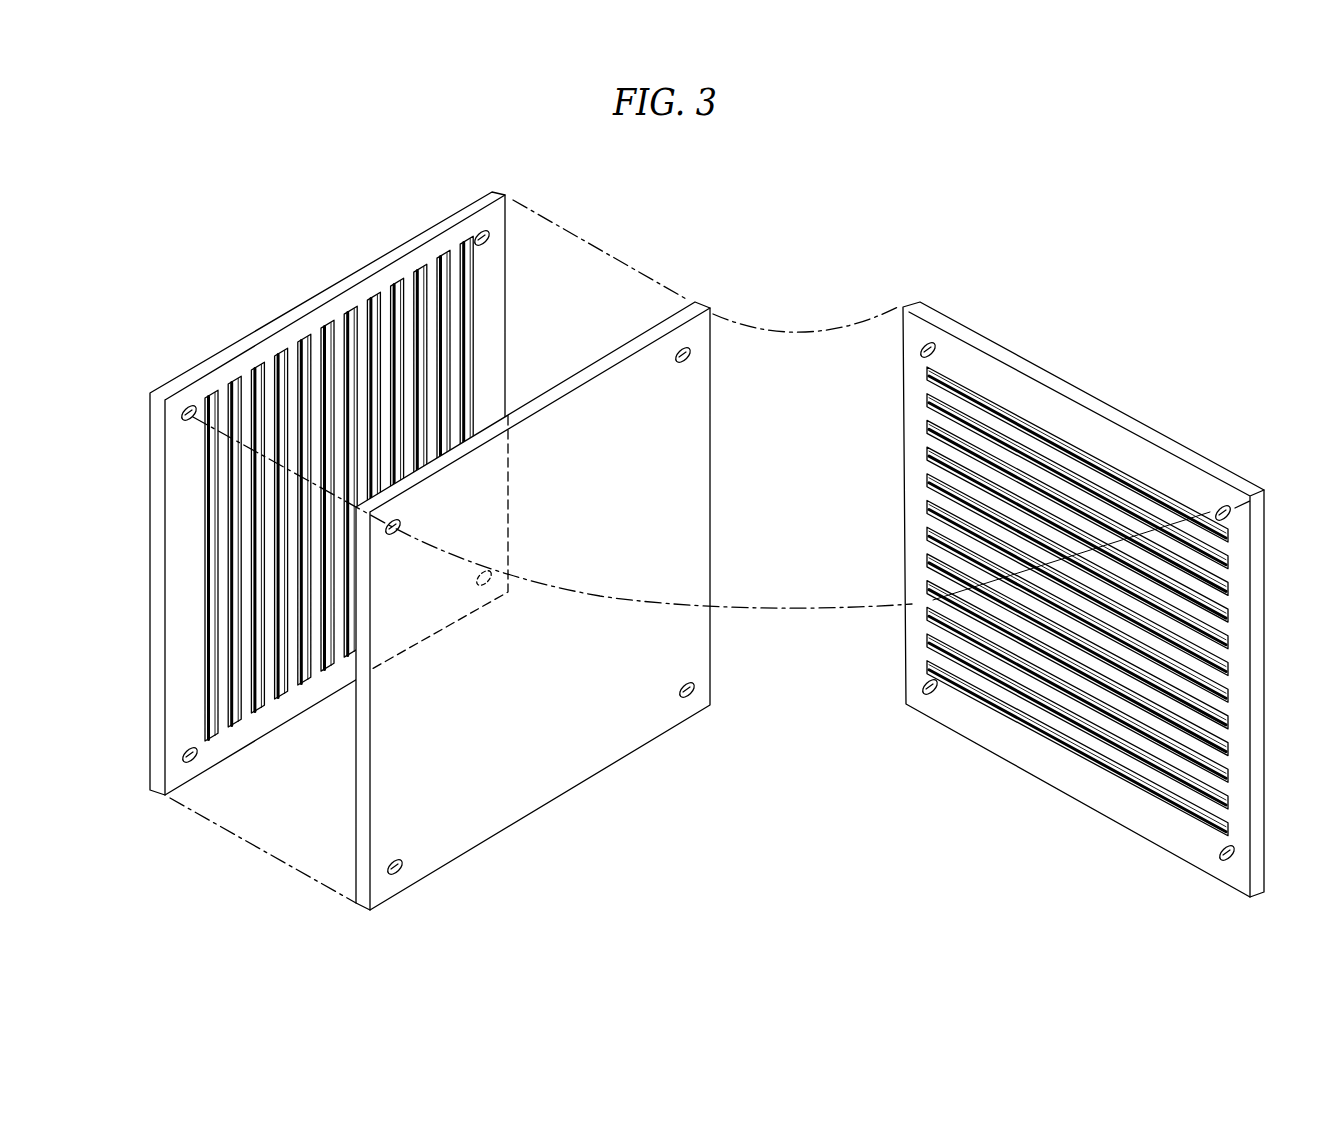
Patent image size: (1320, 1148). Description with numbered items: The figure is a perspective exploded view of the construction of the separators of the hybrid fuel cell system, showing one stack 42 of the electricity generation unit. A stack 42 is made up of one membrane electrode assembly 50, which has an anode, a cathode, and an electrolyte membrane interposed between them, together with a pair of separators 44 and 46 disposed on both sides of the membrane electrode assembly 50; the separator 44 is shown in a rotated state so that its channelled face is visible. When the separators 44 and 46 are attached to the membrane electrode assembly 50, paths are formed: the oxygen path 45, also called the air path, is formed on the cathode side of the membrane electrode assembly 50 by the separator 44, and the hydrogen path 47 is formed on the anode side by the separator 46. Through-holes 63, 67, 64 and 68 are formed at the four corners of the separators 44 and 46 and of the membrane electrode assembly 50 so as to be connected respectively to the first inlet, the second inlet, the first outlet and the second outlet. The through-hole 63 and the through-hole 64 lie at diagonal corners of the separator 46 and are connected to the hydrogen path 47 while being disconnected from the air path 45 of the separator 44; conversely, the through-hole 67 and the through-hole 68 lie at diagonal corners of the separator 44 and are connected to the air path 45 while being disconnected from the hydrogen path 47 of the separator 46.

The stack 42 is at (874, 244).
The separator 44 is at (322, 291).
The oxygen path 45 is at (207, 576).
The separator 46 is at (1094, 396).
The hydrogen path 47 is at (1062, 742).
The membrane electrode assembly 50 is at (543, 811).
The through-hole 63 is at (492, 588).
The through-hole 64 is at (193, 405).
The through-hole 67 is at (198, 762).
The through-hole 68 is at (489, 231).